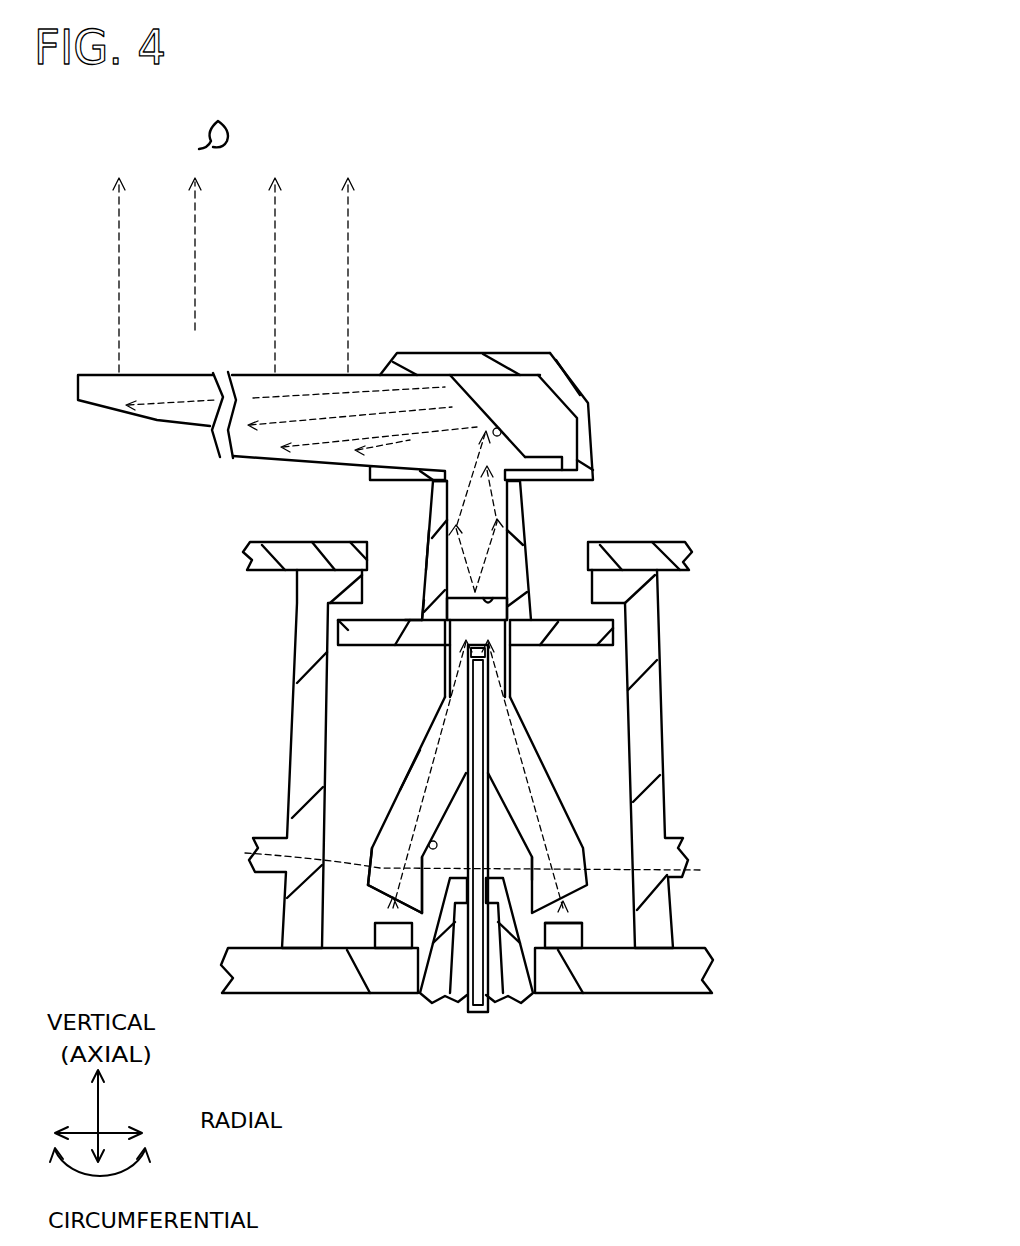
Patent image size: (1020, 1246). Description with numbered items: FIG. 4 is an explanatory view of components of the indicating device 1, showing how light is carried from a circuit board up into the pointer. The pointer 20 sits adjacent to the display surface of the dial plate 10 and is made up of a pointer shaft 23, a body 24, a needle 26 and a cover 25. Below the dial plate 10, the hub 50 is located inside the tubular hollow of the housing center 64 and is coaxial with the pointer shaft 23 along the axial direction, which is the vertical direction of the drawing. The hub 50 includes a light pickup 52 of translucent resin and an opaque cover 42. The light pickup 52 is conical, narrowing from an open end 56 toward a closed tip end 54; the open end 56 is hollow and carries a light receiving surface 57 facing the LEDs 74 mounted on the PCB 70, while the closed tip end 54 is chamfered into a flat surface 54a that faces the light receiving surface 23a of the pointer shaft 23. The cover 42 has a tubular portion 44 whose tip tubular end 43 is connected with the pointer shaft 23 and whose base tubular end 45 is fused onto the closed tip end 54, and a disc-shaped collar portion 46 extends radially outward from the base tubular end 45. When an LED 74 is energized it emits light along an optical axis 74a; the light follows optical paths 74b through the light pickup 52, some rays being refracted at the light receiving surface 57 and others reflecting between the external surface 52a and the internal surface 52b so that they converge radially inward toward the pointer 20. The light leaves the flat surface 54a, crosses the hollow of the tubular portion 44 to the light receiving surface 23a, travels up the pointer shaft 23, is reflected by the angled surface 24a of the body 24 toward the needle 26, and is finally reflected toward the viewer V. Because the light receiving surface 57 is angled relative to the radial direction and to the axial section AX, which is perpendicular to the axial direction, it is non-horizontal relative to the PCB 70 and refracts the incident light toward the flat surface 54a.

The cooling apparatus 1 is at (770, 456).
The dial plate 10 is at (655, 553).
The pointer 20 is at (558, 338).
The pointer shaft 23 is at (518, 498).
The light receiving surface 23a is at (510, 595).
The body 24 is at (527, 453).
The angled surface 24a is at (505, 437).
The cover 25 is at (467, 352).
The needle 26 is at (253, 375).
The cover 42 is at (605, 654).
The tip tubular end 43 is at (433, 486).
The tubular portion 44 is at (429, 548).
The base tubular end 45 is at (420, 618).
The collar portion 46 is at (410, 622).
The hub 50 is at (600, 692).
The light pickup 52 is at (570, 776).
The external surface 52a is at (374, 860).
The internal surface 52b is at (427, 848).
The closed tip end 54 is at (355, 658).
The flat surface 54a is at (445, 645).
The open end 56 is at (412, 775).
The light receiving surface 57 is at (378, 895).
The housing center 64 is at (633, 618).
The PCB 70 is at (688, 980).
The LEDs 74 is at (375, 937).
The optical axis 74a is at (573, 912).
The optical path 74b is at (547, 850).
The viewer V is at (229, 121).
The axial section AX is at (451, 860).